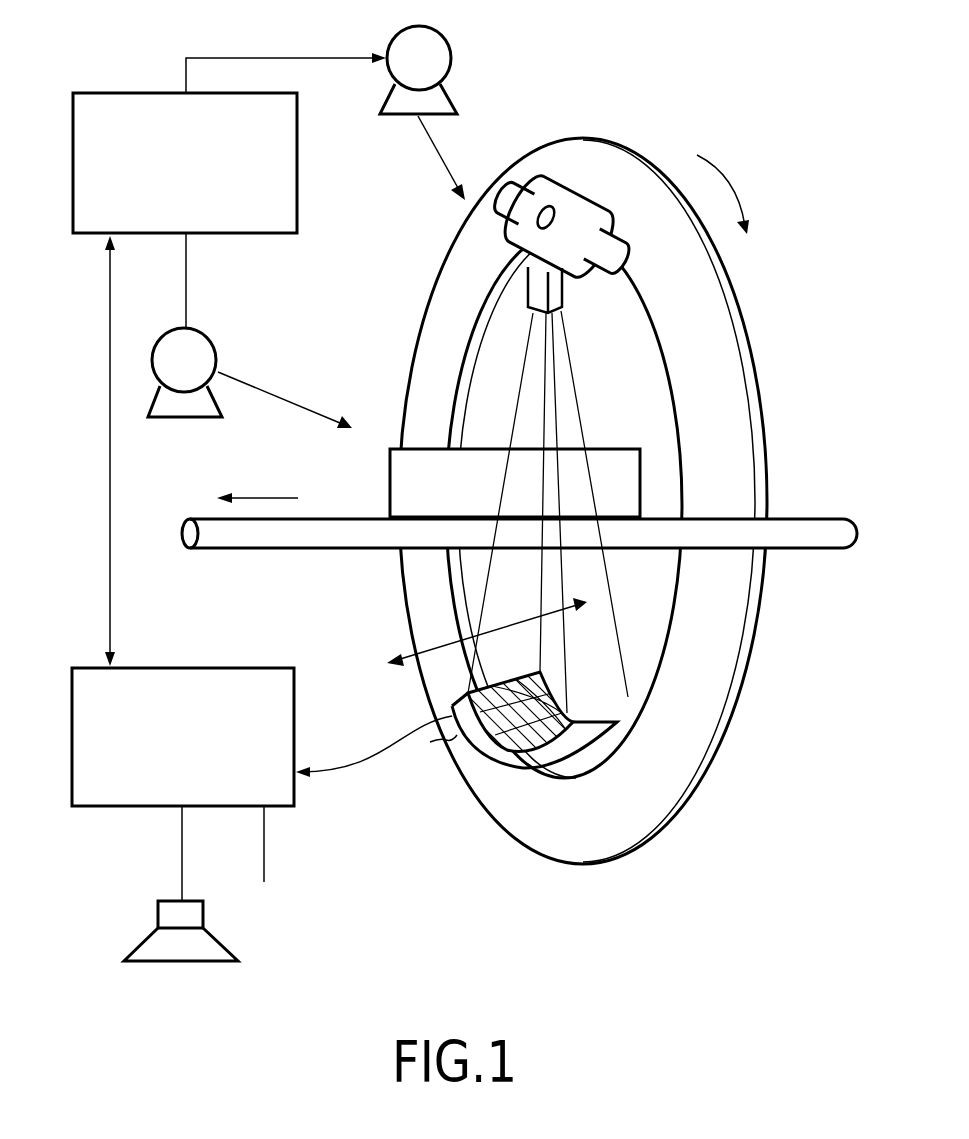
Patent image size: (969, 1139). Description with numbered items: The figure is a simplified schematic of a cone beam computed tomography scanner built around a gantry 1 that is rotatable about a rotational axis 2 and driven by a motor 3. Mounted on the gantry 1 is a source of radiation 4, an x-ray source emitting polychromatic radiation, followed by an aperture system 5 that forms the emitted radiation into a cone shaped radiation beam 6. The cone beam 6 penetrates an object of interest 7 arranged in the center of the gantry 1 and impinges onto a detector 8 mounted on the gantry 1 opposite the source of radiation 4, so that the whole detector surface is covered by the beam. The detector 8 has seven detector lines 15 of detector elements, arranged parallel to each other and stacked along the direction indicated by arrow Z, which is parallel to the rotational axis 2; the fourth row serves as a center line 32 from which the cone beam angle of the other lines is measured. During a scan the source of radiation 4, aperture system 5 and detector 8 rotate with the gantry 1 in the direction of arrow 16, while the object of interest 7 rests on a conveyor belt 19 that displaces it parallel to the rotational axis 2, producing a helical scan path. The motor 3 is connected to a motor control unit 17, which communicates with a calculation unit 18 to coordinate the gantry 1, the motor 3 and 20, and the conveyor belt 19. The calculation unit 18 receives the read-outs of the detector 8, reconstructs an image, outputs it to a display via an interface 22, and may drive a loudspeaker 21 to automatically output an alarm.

The gantry 1 is at (730, 655).
The rotational axis 2 is at (267, 498).
The motor 3 is at (448, 40).
The source of radiation 4 is at (572, 200).
The aperture system 5 is at (535, 288).
The cone shaped radiation beam 6 is at (583, 403).
The object of interest 7 is at (390, 480).
The detector 8 is at (500, 770).
The detector lines 15 is at (427, 747).
The arrow indicating direction of rotation 16 is at (723, 183).
The motor control unit 17 is at (120, 93).
The calculation unit 18 is at (208, 667).
The conveyor belt 19 is at (825, 528).
The motor 20 is at (218, 355).
The loudspeaker 21 is at (178, 962).
The interface 22 is at (266, 846).
The center line of the detector 32 is at (503, 682).
The arrow z Z is at (440, 641).